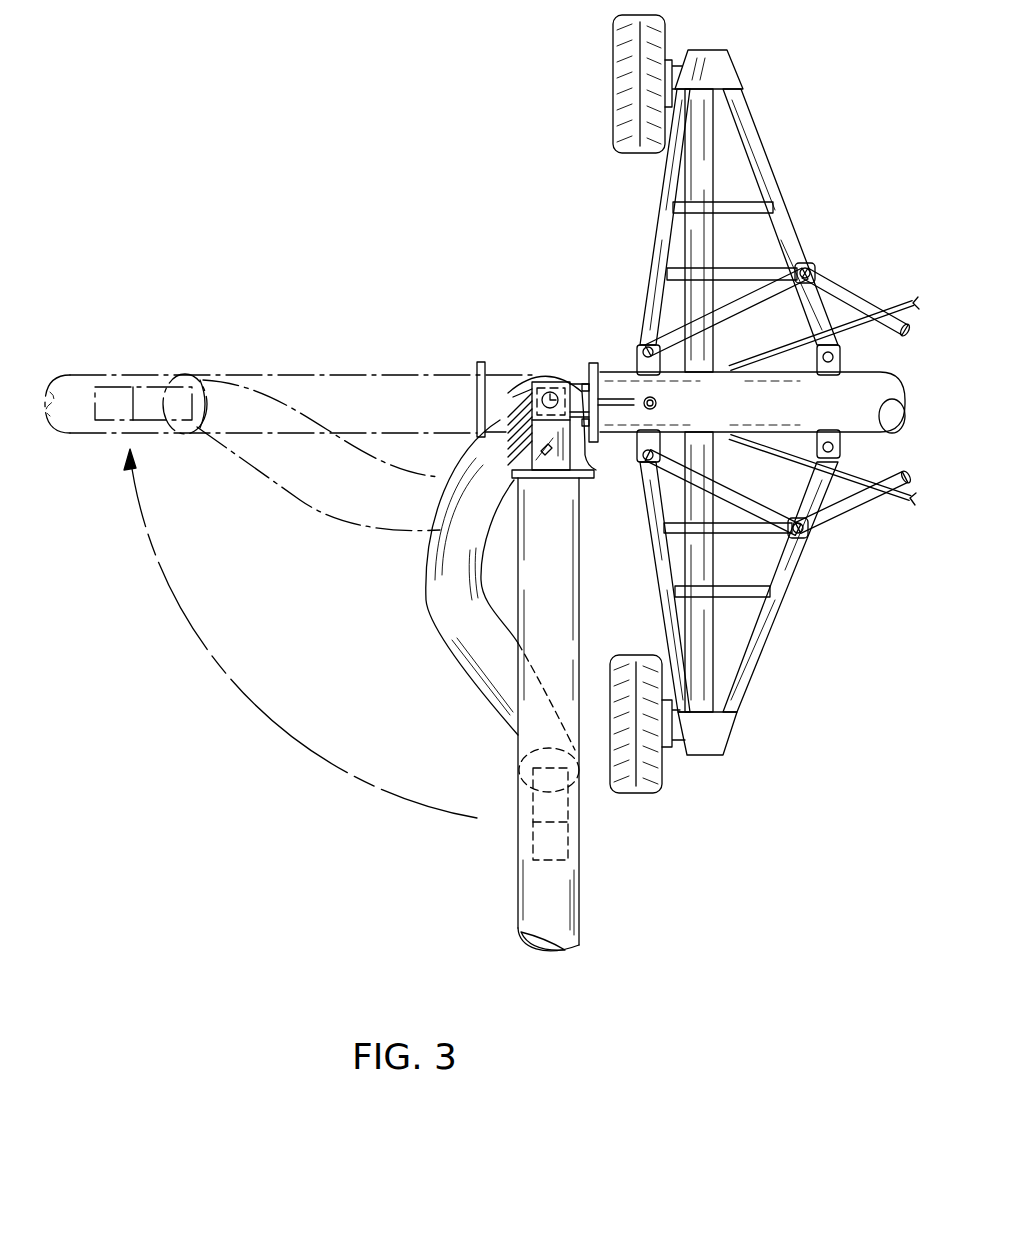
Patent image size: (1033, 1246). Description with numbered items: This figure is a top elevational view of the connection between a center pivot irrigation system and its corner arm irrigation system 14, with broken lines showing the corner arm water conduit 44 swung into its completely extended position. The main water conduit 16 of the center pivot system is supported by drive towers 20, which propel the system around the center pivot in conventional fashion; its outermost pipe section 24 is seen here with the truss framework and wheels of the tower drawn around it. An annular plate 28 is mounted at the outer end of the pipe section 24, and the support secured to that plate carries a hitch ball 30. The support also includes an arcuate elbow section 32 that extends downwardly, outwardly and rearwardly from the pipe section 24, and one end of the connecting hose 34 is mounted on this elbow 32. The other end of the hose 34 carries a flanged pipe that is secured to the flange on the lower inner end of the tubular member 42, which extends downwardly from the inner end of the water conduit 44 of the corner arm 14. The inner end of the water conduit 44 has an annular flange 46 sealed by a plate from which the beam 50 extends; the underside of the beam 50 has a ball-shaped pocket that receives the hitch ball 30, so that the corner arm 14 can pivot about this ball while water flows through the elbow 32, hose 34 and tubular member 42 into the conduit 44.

The corner arm irrigation system 14 is at (490, 857).
The main water conduit 16 is at (869, 290).
The drive tower 20 is at (762, 630).
The outermost pipe section 24 is at (816, 409).
The annular plate 28 is at (600, 372).
The hitch ball 30 is at (547, 382).
The elbow section 32 is at (479, 427).
The connecting hose 34 is at (460, 623).
The tubular member 42 is at (553, 810).
The water conduit 44 is at (338, 378).
The annular flange 46 is at (595, 481).
The beam 50 is at (566, 398).